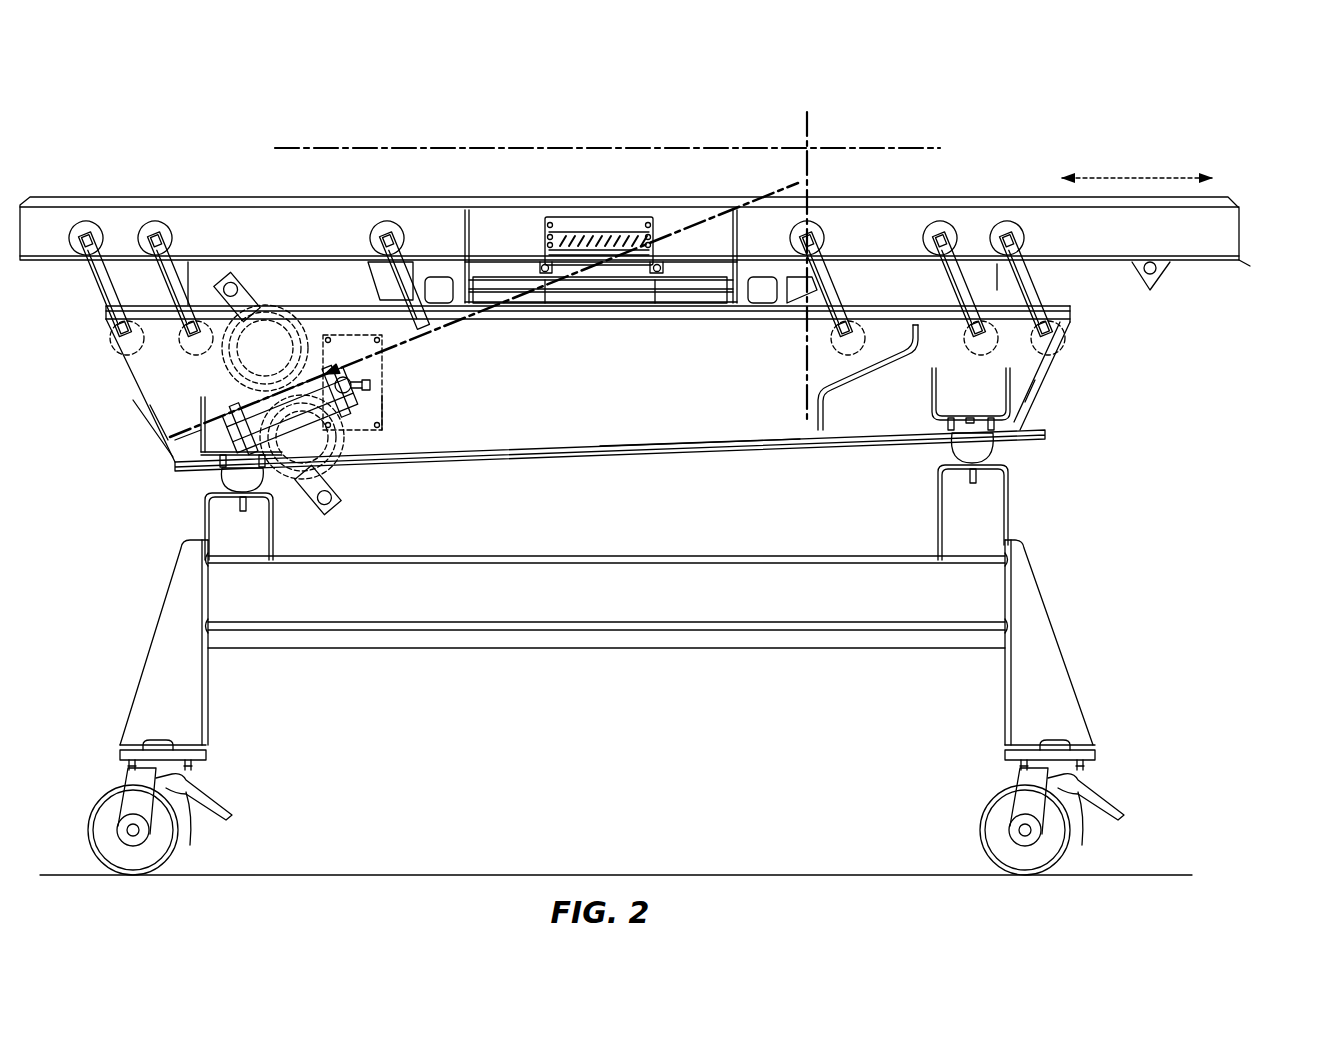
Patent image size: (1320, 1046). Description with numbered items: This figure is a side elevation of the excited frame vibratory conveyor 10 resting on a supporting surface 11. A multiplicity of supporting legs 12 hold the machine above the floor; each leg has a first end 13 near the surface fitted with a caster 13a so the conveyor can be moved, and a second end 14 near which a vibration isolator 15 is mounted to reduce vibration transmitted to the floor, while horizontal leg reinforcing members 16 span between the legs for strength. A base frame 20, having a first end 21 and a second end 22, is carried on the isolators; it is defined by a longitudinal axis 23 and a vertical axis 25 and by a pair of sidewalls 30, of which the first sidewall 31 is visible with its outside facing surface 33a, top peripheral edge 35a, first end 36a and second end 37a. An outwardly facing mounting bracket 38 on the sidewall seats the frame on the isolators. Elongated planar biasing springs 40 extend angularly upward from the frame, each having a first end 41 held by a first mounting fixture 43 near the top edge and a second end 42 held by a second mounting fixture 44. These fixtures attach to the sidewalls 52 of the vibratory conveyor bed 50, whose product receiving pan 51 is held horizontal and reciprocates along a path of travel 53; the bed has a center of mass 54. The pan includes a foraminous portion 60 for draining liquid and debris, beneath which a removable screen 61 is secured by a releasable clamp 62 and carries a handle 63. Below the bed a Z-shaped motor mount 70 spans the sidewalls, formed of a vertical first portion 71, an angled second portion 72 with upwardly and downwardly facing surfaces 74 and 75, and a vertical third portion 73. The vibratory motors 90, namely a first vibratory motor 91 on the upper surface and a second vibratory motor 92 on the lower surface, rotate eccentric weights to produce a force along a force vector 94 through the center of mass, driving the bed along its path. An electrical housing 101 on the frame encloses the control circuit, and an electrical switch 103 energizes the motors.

The excited frame vibratory conveyor 10 is at (1222, 128).
The supporting surface 11 is at (477, 873).
The supporting legs 12 is at (130, 637).
The first end of supporting leg 13 is at (122, 740).
The caster 13a is at (173, 857).
The second end of supporting leg 14 is at (202, 520).
The vibration isolator 15 is at (233, 478).
The leg reinforcing members 16 is at (563, 638).
The base frame 20 is at (95, 455).
The first end of base frame 21 is at (123, 417).
The second end of base frame 22 is at (1023, 408).
The longitudinal axis 23 is at (590, 143).
The vertical axis 25 is at (807, 415).
The pair of sidewalls 30 is at (580, 403).
The first sidewall 31 is at (453, 422).
The outside facing surface of first sidewall 33a is at (678, 407).
The top peripheral edge of first sidewall 35a is at (452, 318).
The first end of first sidewall 36a is at (170, 412).
The second end of first sidewall 37a is at (1028, 390).
The mounting bracket 38 is at (930, 382).
The elongated planar biasing springs 40 is at (203, 272).
The first end of biasing spring 41 is at (182, 352).
The second end of biasing spring 42 is at (88, 233).
The first mounting fixture 43 is at (180, 360).
The second mounting fixture 44 is at (830, 235).
The vibratory conveyor bed 50 is at (450, 187).
The product receiving pan 51 is at (312, 255).
The sidewalls of conveyor bed 52 is at (263, 227).
The path of travel 53 is at (1115, 178).
The center of mass 54 is at (600, 267).
The foraminous portion 60 is at (503, 260).
The removable screen 61 is at (507, 280).
The releasable clamp 62 is at (568, 227).
The handle 63 is at (570, 267).
The motor mount 70 is at (372, 368).
The first portion of motor mount 71 is at (172, 436).
The second portion of motor mount 72 is at (287, 487).
The third portion of motor mount 73 is at (325, 365).
The upwardly facing surface 74 is at (230, 400).
The downwardly facing surface 75 is at (347, 447).
The vibratory motors 90 is at (258, 274).
The first vibratory motor 91 is at (254, 359).
The second vibratory motor 92 is at (292, 448).
The force vector 94 is at (690, 227).
The electrical housing 101 is at (385, 400).
The electrical switch 103 is at (380, 428).